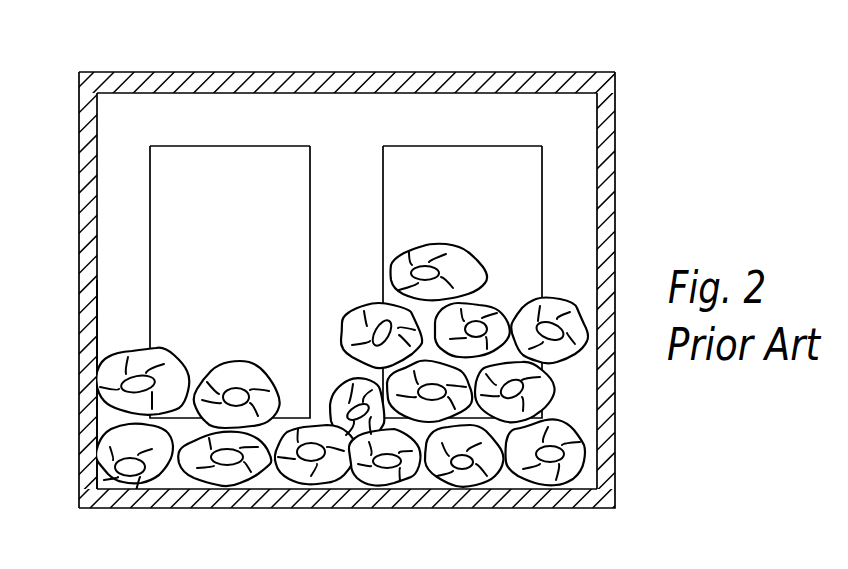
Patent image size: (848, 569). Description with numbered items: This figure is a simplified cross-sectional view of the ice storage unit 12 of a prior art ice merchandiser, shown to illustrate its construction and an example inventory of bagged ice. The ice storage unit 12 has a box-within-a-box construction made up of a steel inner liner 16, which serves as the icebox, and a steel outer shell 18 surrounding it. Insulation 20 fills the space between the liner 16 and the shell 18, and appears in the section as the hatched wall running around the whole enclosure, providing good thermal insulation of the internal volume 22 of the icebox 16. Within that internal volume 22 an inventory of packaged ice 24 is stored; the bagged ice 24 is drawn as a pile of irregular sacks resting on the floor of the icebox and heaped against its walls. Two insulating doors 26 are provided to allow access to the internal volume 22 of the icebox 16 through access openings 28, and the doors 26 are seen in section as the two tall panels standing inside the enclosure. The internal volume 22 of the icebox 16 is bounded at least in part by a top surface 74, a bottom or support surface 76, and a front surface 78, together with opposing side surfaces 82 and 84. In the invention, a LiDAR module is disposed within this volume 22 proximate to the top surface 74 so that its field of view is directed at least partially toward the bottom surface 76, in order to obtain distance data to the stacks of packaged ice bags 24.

The ice storage unit 12 is at (636, 127).
The inner liner 16 is at (93, 247).
The outer shell 18 is at (82, 133).
The insulation 20 is at (490, 82).
The internal volume 22 is at (392, 118).
The packaged ice 24 is at (400, 245).
The insulating doors 26 is at (255, 222).
The access openings 28 is at (156, 184).
The top surface 74 is at (268, 97).
The bottom surface 76 is at (503, 477).
The front surface 78 is at (173, 118).
The side surface 82 is at (95, 302).
The side surface 84 is at (587, 236).